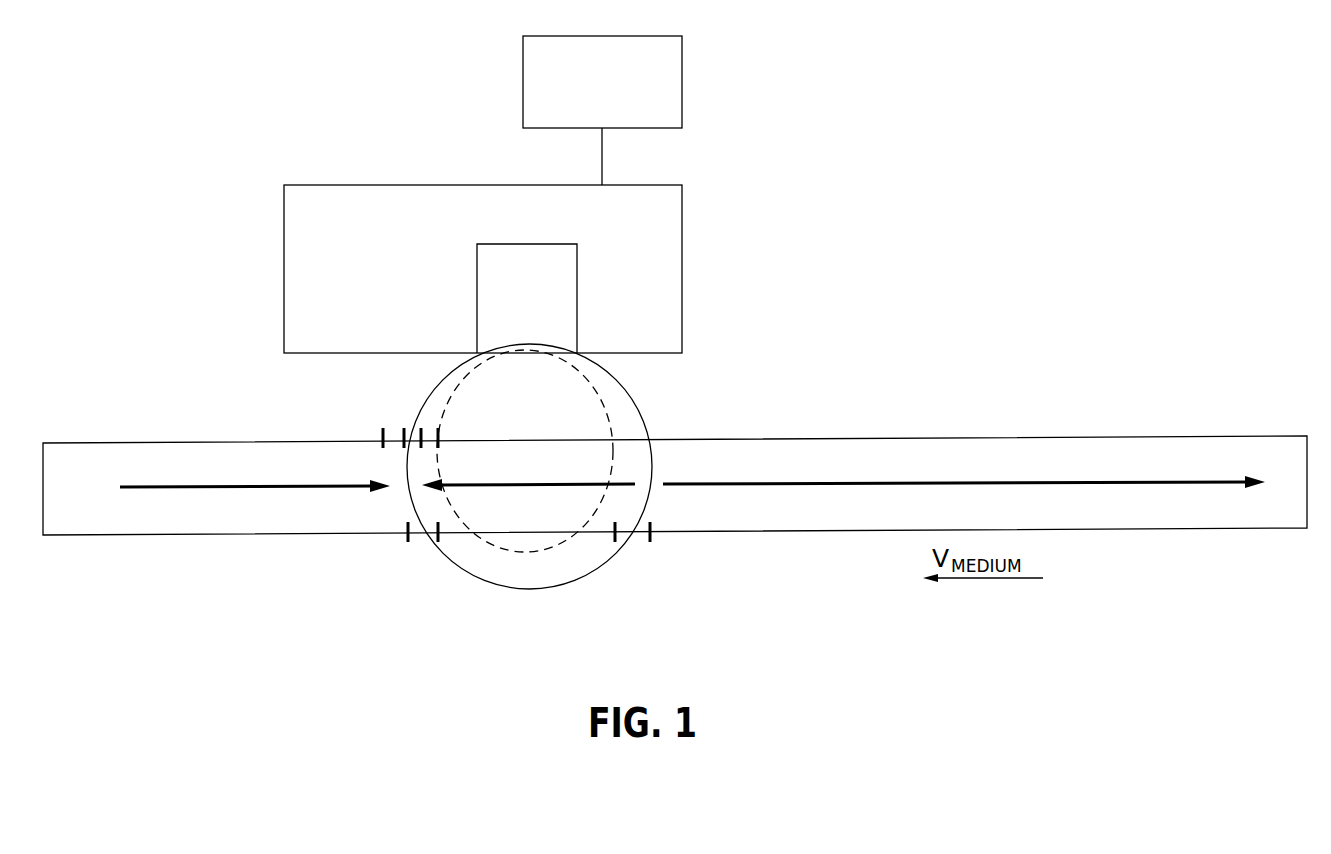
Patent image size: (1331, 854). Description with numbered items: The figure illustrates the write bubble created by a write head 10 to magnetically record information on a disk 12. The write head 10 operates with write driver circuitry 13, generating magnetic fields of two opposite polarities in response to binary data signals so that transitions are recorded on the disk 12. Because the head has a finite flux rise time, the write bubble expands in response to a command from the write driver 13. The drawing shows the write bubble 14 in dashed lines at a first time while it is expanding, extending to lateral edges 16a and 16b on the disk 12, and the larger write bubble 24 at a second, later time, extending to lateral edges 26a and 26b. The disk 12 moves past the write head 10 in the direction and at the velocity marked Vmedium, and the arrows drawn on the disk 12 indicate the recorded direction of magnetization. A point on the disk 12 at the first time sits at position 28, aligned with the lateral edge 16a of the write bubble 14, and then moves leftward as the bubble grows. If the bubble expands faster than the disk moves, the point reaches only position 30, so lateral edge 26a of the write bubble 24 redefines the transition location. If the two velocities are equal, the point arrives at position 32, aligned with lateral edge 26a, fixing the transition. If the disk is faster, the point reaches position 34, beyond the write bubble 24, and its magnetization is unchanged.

The write head 10 is at (682, 267).
The disk 12 is at (808, 530).
The write driver circuitry 13 is at (682, 78).
The write bubble 14 is at (497, 552).
The lateral edge 16a is at (438, 542).
The lateral edge 16b is at (615, 542).
The write bubble 24 is at (555, 588).
The lateral edge 26a is at (408, 541).
The lateral edge 26b is at (650, 542).
The position 28 is at (438, 430).
The position 30 is at (421, 430).
The position 32 is at (404, 430).
The position 34 is at (383, 430).